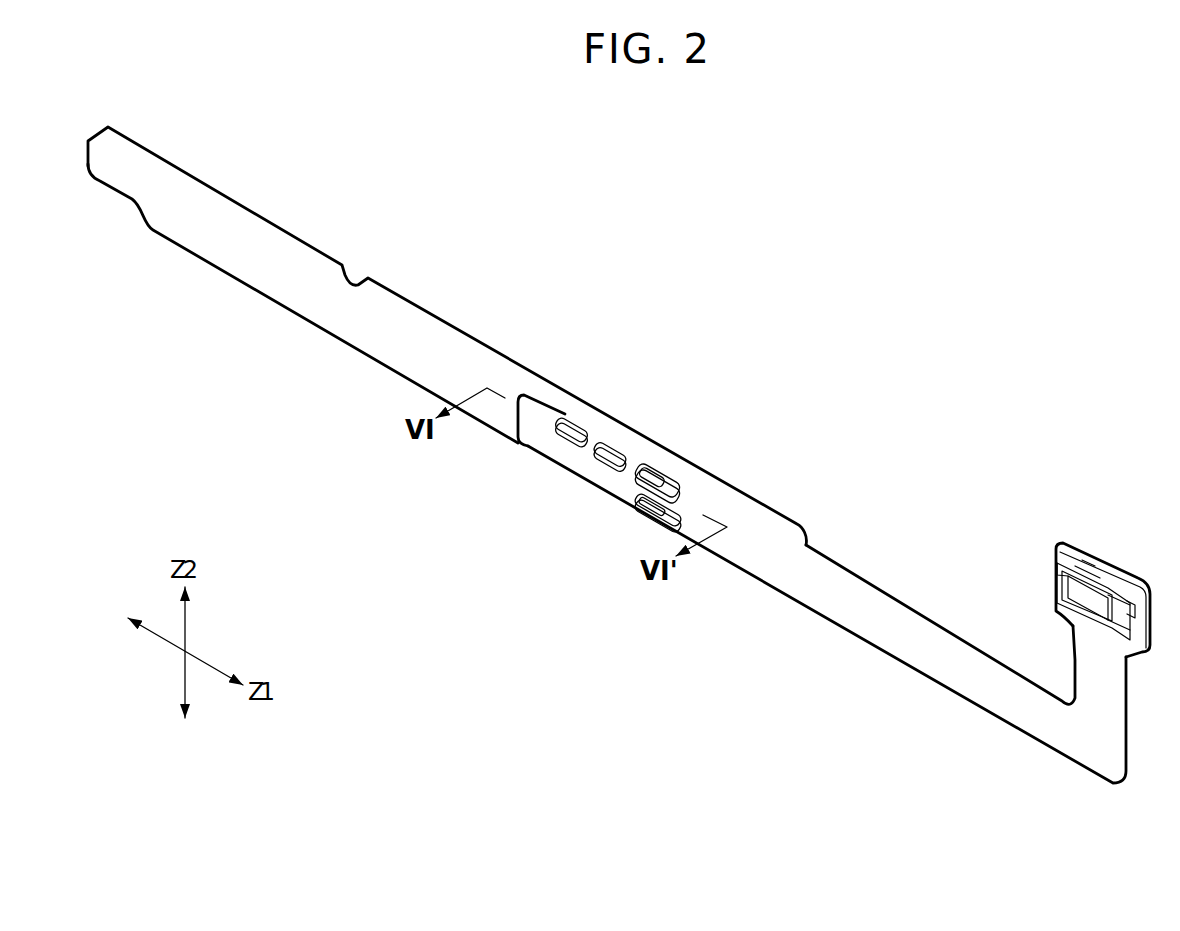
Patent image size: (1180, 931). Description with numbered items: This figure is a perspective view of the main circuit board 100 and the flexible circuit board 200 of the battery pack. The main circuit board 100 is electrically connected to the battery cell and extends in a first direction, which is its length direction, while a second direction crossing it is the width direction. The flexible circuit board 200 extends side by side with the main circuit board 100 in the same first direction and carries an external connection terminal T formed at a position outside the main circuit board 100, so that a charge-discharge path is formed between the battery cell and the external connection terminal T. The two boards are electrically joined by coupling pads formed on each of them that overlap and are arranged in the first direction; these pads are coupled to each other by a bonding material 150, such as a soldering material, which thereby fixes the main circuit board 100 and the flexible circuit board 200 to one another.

The main circuit board 100 is at (230, 257).
The bonding material 150 is at (648, 472).
The flexible circuit board 200 is at (853, 592).
The external connection terminal T is at (1098, 585).